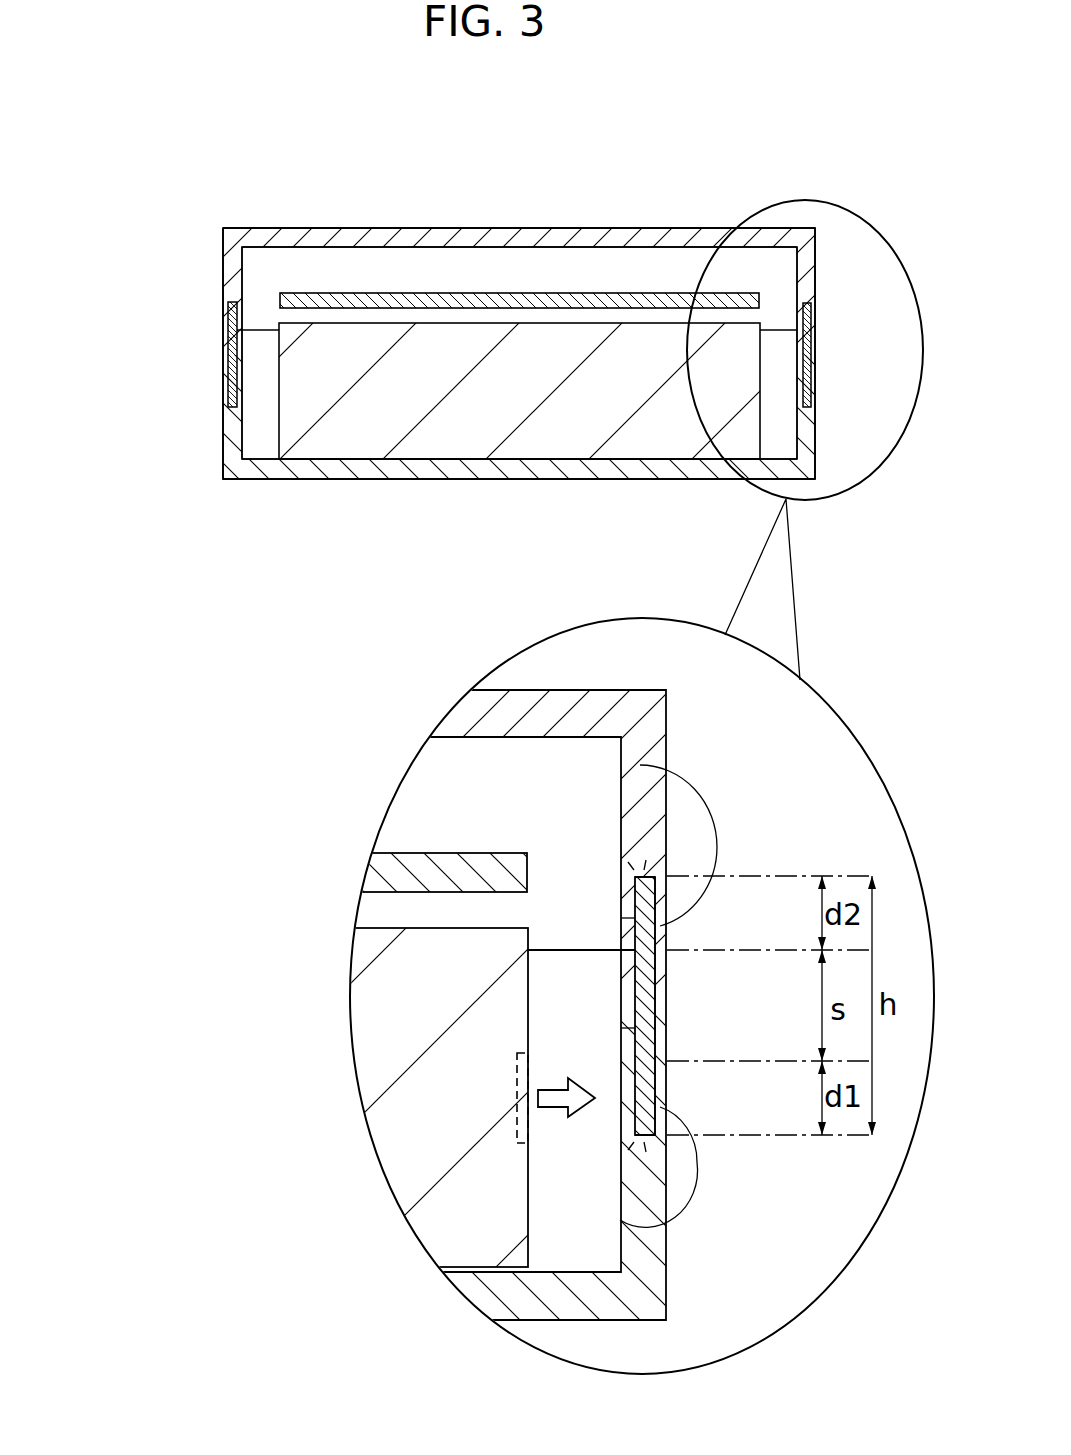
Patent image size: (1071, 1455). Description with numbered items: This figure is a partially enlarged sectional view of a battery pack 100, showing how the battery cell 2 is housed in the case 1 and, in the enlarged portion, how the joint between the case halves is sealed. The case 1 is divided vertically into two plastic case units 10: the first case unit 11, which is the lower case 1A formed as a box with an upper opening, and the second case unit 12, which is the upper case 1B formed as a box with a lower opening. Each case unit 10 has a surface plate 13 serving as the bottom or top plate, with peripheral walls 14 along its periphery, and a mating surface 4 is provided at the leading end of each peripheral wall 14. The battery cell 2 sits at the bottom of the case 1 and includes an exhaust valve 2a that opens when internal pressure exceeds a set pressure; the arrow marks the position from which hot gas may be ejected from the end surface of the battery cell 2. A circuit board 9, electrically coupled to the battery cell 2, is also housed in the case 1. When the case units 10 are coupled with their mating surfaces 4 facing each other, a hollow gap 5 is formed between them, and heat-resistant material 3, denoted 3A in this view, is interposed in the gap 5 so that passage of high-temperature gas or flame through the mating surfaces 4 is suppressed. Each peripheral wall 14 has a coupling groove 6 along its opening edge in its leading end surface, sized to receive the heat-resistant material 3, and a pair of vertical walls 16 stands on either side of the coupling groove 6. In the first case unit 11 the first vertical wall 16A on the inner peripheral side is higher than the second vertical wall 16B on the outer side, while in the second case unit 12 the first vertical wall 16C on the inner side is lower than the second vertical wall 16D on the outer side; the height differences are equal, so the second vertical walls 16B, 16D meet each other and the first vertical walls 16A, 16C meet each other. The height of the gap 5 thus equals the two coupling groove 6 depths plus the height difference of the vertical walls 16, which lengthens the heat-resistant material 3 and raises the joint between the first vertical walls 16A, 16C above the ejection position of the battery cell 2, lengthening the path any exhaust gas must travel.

The battery pack 100 is at (192, 162).
The case unit 10 is at (521, 702).
The first case unit 11 is at (680, 565).
The second case unit 12 is at (823, 142).
The surface plate 13 is at (457, 235).
The peripheral wall 14 is at (230, 273).
The case 1 is at (87, 262).
The lower case 1A is at (200, 416).
The upper case 1B is at (200, 275).
The battery cell 2 is at (490, 406).
The exhaust valve 2a is at (517, 1077).
The heat-resistant material 3 is at (519, 718).
The first terminal 3A is at (663, 1093).
The mating surface 4 is at (652, 985).
The gap 5 is at (655, 1003).
The coupling groove 6 is at (642, 876).
The circuit board 9 is at (540, 295).
The vertical wall 16 is at (255, 712).
The first vertical wall 16A is at (627, 1028).
The second vertical wall 16B is at (620, 1220).
The first vertical wall 16C is at (628, 918).
The second vertical wall 16D is at (640, 765).